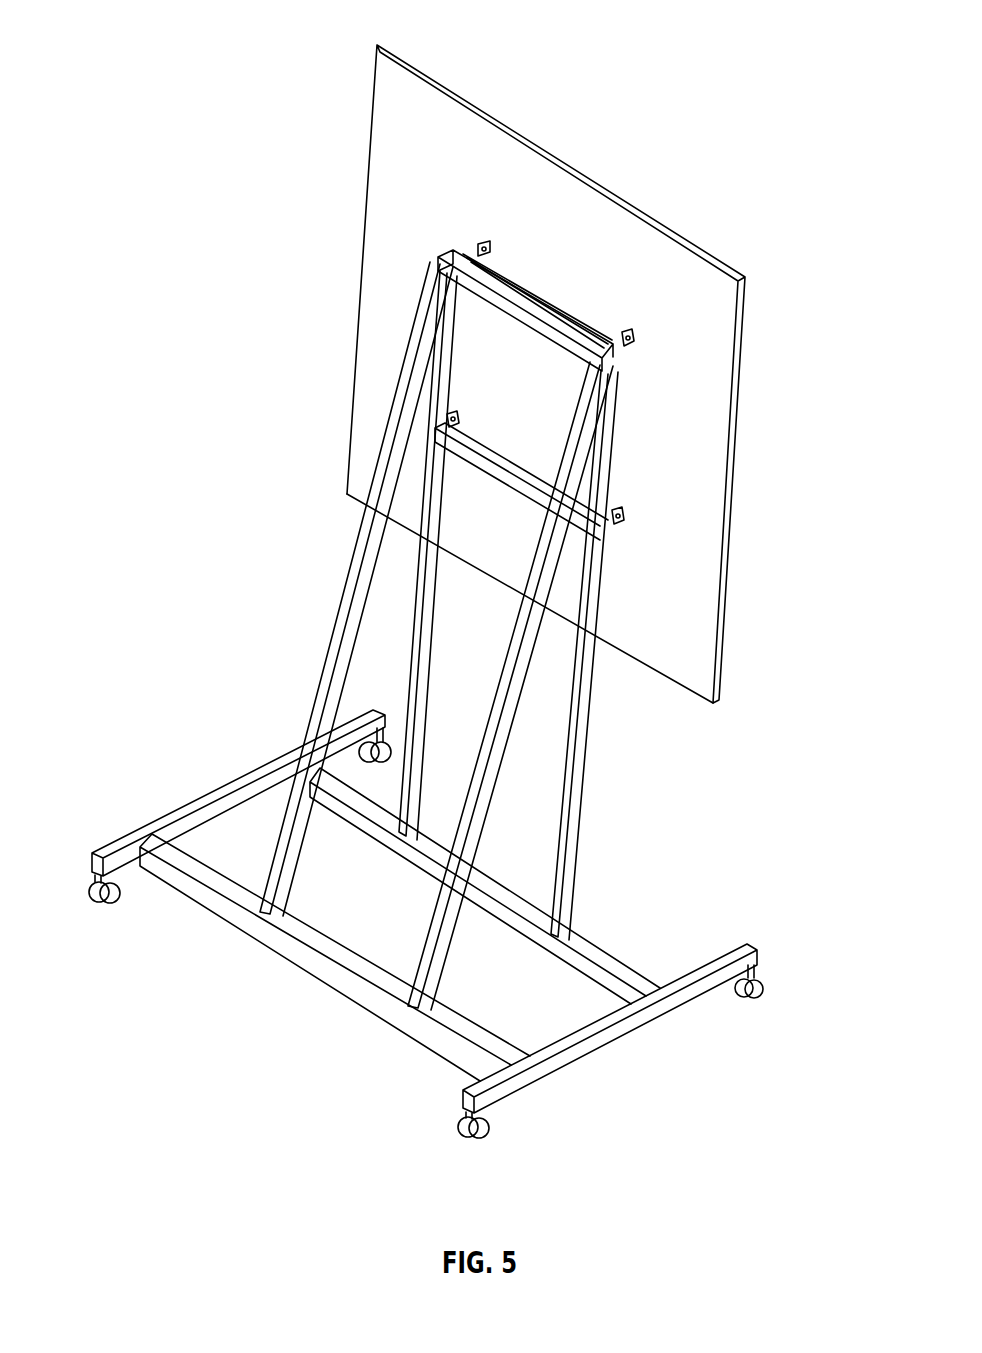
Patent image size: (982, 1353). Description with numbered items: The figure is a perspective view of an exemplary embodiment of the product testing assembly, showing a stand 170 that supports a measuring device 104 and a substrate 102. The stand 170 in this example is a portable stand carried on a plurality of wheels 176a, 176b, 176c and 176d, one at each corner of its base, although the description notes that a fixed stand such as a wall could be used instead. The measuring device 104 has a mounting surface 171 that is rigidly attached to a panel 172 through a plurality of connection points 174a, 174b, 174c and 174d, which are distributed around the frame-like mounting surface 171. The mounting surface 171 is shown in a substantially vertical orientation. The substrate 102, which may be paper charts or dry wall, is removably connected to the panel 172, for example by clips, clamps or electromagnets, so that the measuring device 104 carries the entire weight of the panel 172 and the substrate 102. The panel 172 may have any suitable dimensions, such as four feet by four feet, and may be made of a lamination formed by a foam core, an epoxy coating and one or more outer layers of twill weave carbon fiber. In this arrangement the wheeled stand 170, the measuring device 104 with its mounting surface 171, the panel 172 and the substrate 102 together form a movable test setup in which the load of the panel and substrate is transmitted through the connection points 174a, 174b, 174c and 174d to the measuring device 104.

The substrate 102 is at (730, 447).
The measuring device 104 is at (545, 595).
The stand 170 is at (580, 778).
The mounting surface 171 is at (610, 448).
The panel 172 is at (702, 690).
The connection point 174a is at (483, 243).
The connection point 174b is at (628, 332).
The connection point 174c is at (624, 516).
The connection point 174d is at (450, 415).
The wheel 176a is at (365, 748).
The wheel 176b is at (748, 1000).
The wheel 176c is at (105, 905).
The wheel 176d is at (474, 1140).